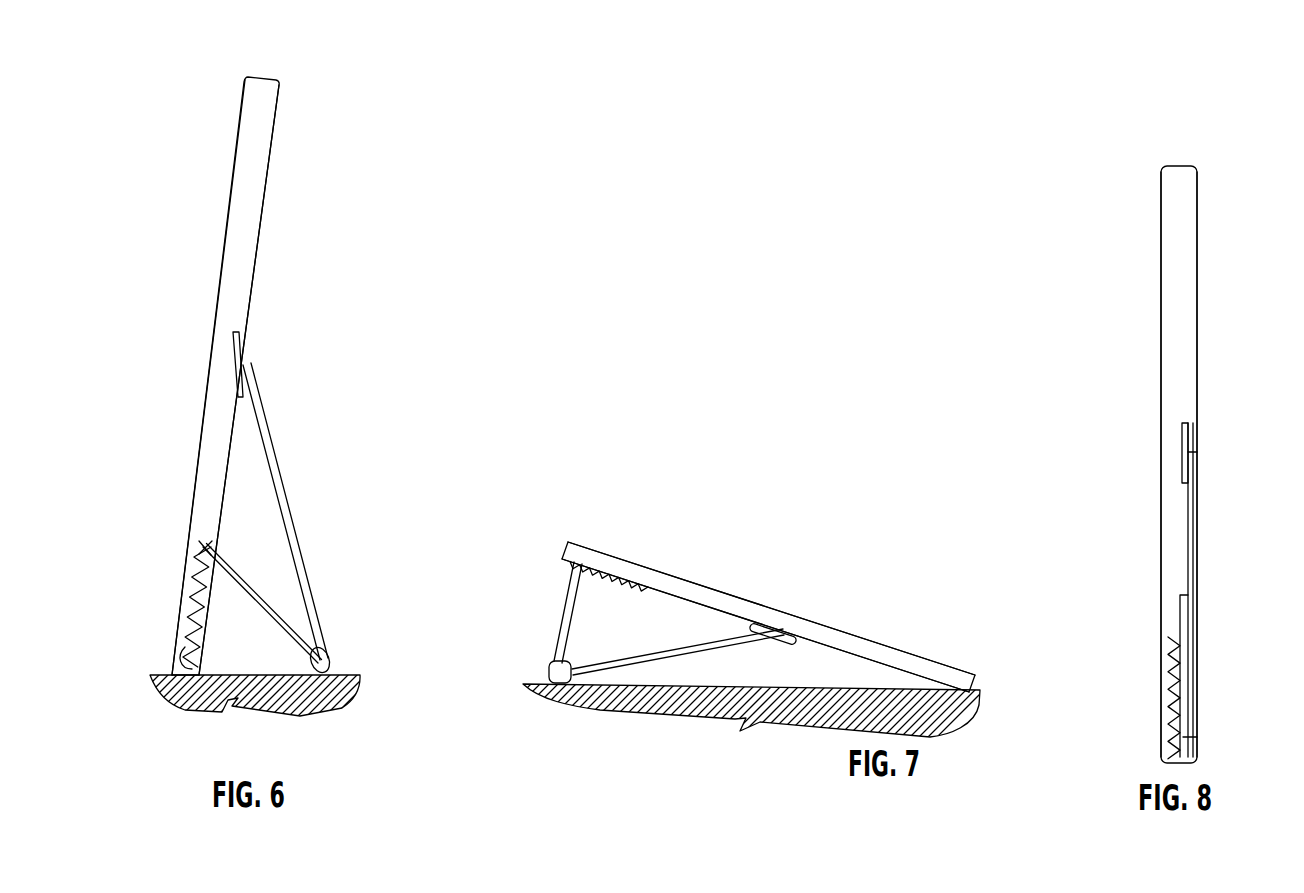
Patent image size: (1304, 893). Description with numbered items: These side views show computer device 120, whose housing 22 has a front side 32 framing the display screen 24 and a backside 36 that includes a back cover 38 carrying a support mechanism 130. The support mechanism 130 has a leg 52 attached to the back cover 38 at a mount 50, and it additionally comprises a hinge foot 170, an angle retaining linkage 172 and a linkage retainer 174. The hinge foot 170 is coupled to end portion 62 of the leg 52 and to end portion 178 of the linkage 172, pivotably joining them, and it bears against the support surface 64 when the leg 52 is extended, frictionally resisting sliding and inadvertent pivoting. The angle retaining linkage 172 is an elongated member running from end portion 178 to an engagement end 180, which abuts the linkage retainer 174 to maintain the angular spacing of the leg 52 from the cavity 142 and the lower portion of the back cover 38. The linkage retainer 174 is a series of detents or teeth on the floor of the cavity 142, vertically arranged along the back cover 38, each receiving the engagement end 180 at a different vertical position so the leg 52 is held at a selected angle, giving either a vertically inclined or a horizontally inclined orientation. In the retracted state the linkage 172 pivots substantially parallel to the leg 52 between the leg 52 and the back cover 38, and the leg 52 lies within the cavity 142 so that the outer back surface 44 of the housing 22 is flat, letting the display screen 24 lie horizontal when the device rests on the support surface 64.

In FIG. 6, the housing 22 is at (286, 92).
In FIG. 7, the housing 22 is at (569, 541).
In FIG. 8, the housing 22 is at (1198, 185).
In FIG. 6, the display screen 24 is at (217, 287).
In FIG. 7, the display screen 24 is at (763, 604).
In FIG. 8, the display screen 24 is at (1165, 362).
In FIG. 6, the front side 32 is at (194, 212).
In FIG. 7, the front side 32 is at (718, 560).
In FIG. 8, the front side 32 is at (1150, 250).
In FIG. 6, the backside 36 is at (298, 182).
In FIG. 7, the backside 36 is at (719, 706).
In FIG. 8, the backside 36 is at (1245, 190).
In FIG. 6, the back cover 38 is at (260, 322).
In FIG. 7, the back cover 38 is at (812, 641).
In FIG. 8, the back cover 38 is at (1198, 250).
In FIG. 8, the outer back surface 44 is at (1198, 398).
In FIG. 6, the bracket / hinge mount 50 is at (247, 353).
In FIG. 7, the bracket / hinge mount 50 is at (783, 628).
In FIG. 8, the bracket / hinge mount 50 is at (1188, 428).
In FIG. 6, the leg 52 is at (284, 492).
In FIG. 7, the leg 52 is at (703, 648).
In FIG. 8, the leg 52 is at (1197, 592).
In FIG. 6, the end portion 62 is at (322, 652).
In FIG. 6, the support surface 64 is at (350, 698).
In FIG. 7, the support surface 64 is at (785, 693).
In FIG. 6, the computer device 120 is at (198, 130).
In FIG. 7, the computer device 120 is at (903, 571).
In FIG. 8, the computer device 120 is at (1097, 228).
In FIG. 6, the support mechanism 130 is at (314, 382).
In FIG. 8, the support mechanism 130 is at (1257, 468).
In FIG. 6, the cavity 142 is at (212, 657).
In FIG. 8, the cavity 142 is at (1190, 525).
In FIG. 6, the hinge foot 170 is at (323, 660).
In FIG. 7, the hinge foot 170 is at (560, 684).
In FIG. 8, the hinge foot 170 is at (1168, 718).
In FIG. 6, the angle retaining linkage 172 is at (270, 634).
In FIG. 7, the angle retaining linkage 172 is at (570, 597).
In FIG. 8, the angle retaining linkage 172 is at (1183, 613).
In FIG. 6, the linkage retainer 174 is at (173, 670).
In FIG. 7, the linkage retainer 174 is at (635, 582).
In FIG. 8, the linkage retainer 174 is at (1168, 668).
In FIG. 6, the end portion 178 is at (303, 667).
In FIG. 6, the engagement end 180 is at (211, 553).